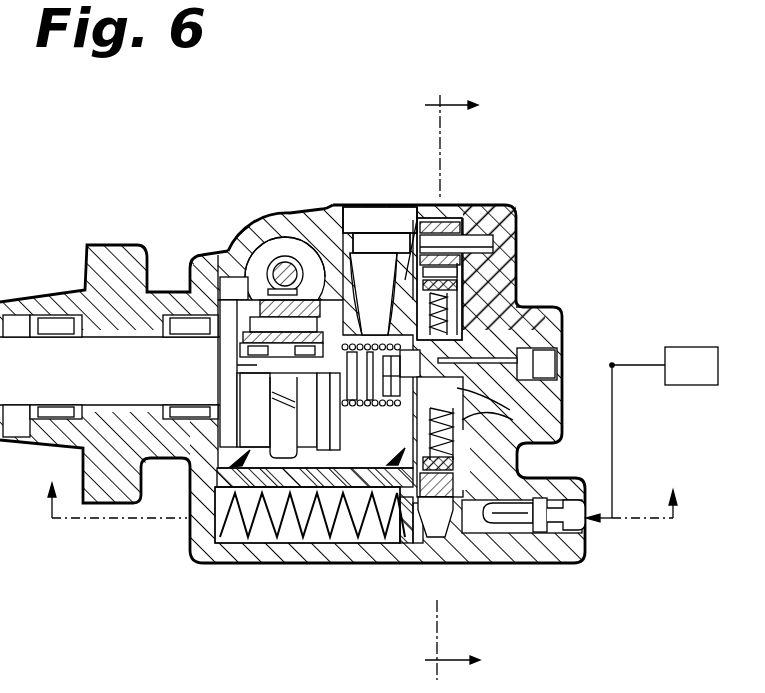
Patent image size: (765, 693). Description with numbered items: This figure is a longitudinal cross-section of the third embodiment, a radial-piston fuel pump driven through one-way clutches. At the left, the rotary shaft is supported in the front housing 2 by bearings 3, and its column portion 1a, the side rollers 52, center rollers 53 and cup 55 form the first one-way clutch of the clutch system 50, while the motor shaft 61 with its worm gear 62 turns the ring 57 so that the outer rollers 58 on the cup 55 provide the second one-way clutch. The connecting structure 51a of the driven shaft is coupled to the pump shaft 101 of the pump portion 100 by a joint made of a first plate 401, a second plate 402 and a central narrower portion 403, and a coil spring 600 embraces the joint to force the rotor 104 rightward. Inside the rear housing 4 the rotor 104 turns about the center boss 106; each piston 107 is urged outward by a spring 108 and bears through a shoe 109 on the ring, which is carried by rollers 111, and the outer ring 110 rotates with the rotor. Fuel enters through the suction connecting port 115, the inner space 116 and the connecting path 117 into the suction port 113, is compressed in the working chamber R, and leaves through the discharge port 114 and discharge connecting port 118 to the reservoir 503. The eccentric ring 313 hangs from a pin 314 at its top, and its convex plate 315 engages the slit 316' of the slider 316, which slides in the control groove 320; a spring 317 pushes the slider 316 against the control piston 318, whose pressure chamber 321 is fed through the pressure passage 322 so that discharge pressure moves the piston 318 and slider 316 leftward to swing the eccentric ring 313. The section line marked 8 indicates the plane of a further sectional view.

The column portion 1a is at (253, 364).
The front housing 2 is at (98, 290).
The bearing 3 is at (45, 448).
The rear housing 4 is at (500, 223).
The section line 8 is at (460, 387).
The clutch system 50 is at (187, 533).
The connecting structure 51a is at (300, 500).
The side rollers 52 is at (233, 357).
The center rollers 53 is at (218, 278).
The cup 55 is at (216, 256).
The ring 57 is at (233, 250).
The outer rollers 58 is at (284, 254).
The motor shaft 61 is at (270, 256).
The worm gear 62 is at (257, 227).
The pump portion 100 is at (391, 650).
The pump shaft 101 is at (400, 240).
The rotor 104 is at (441, 242).
The center boss 106 is at (460, 388).
The piston 107 is at (473, 303).
The spring 108 is at (457, 283).
The shoe 109 is at (467, 260).
The outer ring 110 is at (463, 235).
The rollers 111 is at (510, 213).
The suction port 113 is at (462, 420).
The discharge port 114 is at (525, 345).
The suction connecting port 115 is at (360, 225).
The inner space 116 is at (367, 293).
The connecting path 117 is at (410, 257).
The discharge connecting port 118 is at (547, 363).
The eccentric ring 313 is at (483, 203).
The pin 314 is at (477, 200).
The convex plate 315 is at (437, 525).
The slider 316 is at (415, 551).
The slit 316' is at (421, 550).
The spring 317 is at (235, 545).
The control piston 318 is at (513, 525).
The control groove 320 is at (258, 530).
The pressure chamber 321 is at (535, 520).
The pressure passage 322 is at (617, 441).
The first plate 401 is at (322, 300).
The second plate 402 is at (345, 455).
The central narrower portion 403 is at (335, 455).
The reservoir 503 is at (665, 366).
The coil spring 600 is at (342, 225).
The working chamber R is at (534, 450).